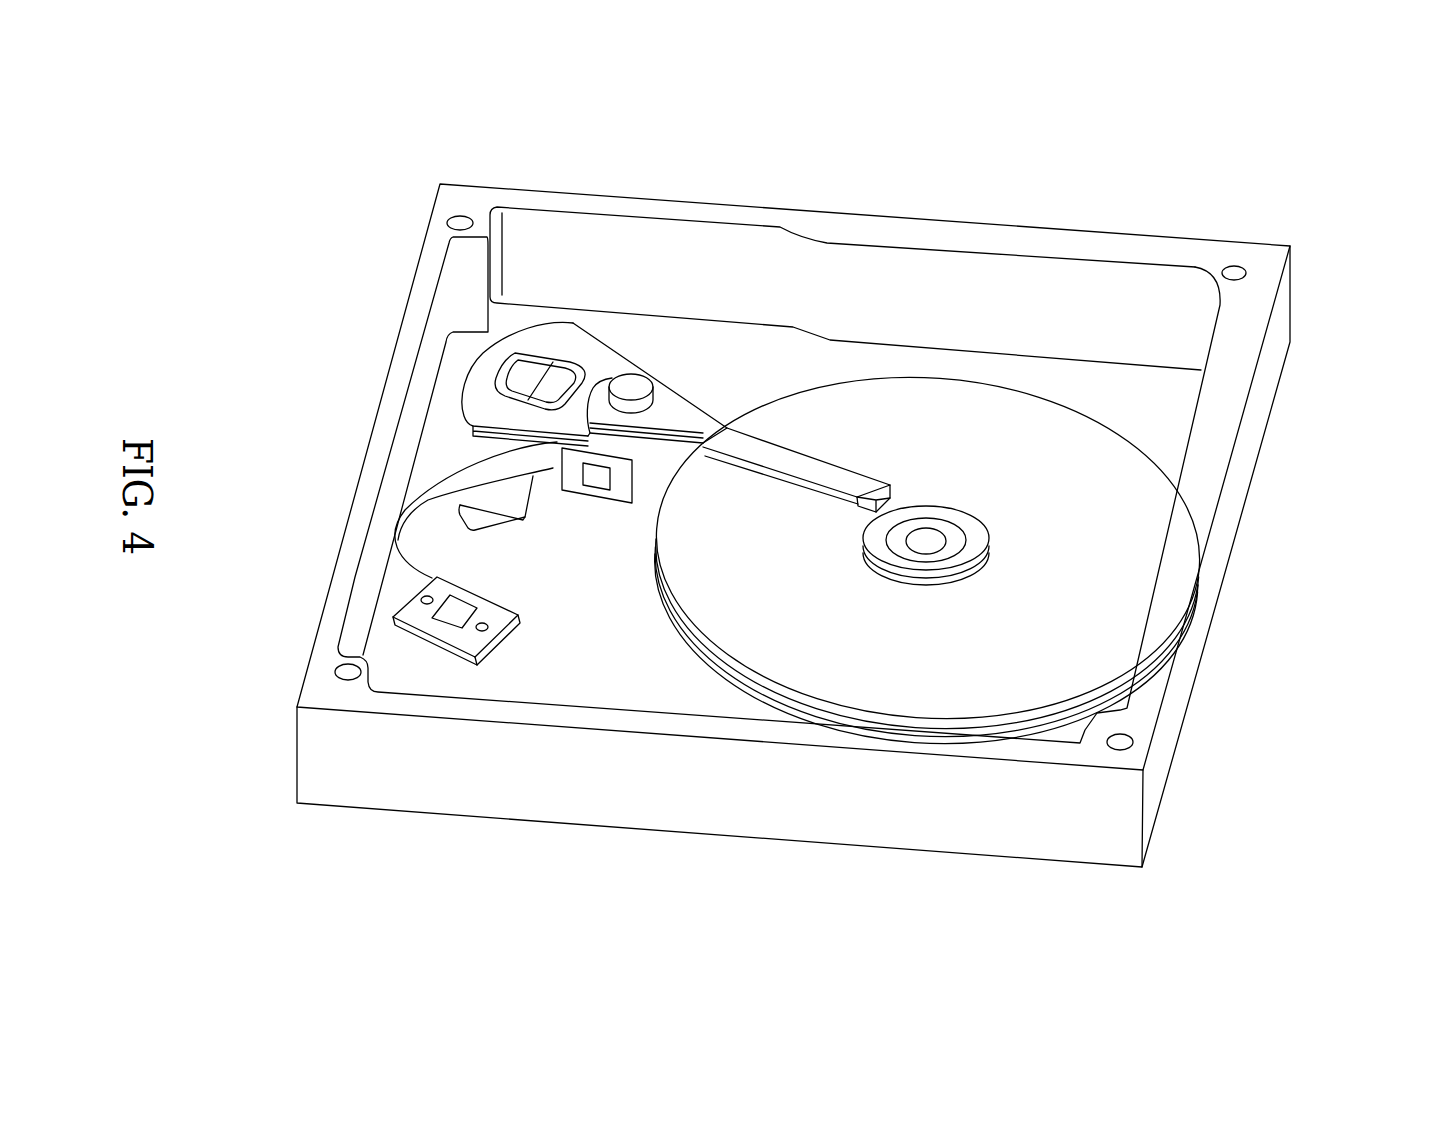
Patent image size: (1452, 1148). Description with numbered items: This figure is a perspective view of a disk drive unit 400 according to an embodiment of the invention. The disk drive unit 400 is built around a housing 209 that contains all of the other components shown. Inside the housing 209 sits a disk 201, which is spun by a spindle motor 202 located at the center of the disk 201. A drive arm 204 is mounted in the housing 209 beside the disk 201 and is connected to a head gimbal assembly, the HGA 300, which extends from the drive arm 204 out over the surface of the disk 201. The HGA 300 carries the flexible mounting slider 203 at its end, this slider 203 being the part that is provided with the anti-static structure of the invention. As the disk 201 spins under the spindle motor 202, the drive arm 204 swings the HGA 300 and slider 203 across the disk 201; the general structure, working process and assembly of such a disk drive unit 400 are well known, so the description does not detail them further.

The disk 201 is at (1060, 450).
The spindle motor 202 is at (953, 540).
The flexible mounting slider 203 is at (855, 500).
The drive arm 204 is at (680, 415).
The housing 209 is at (508, 765).
The HGA 300 is at (817, 452).
The disk drive unit 400 is at (666, 902).